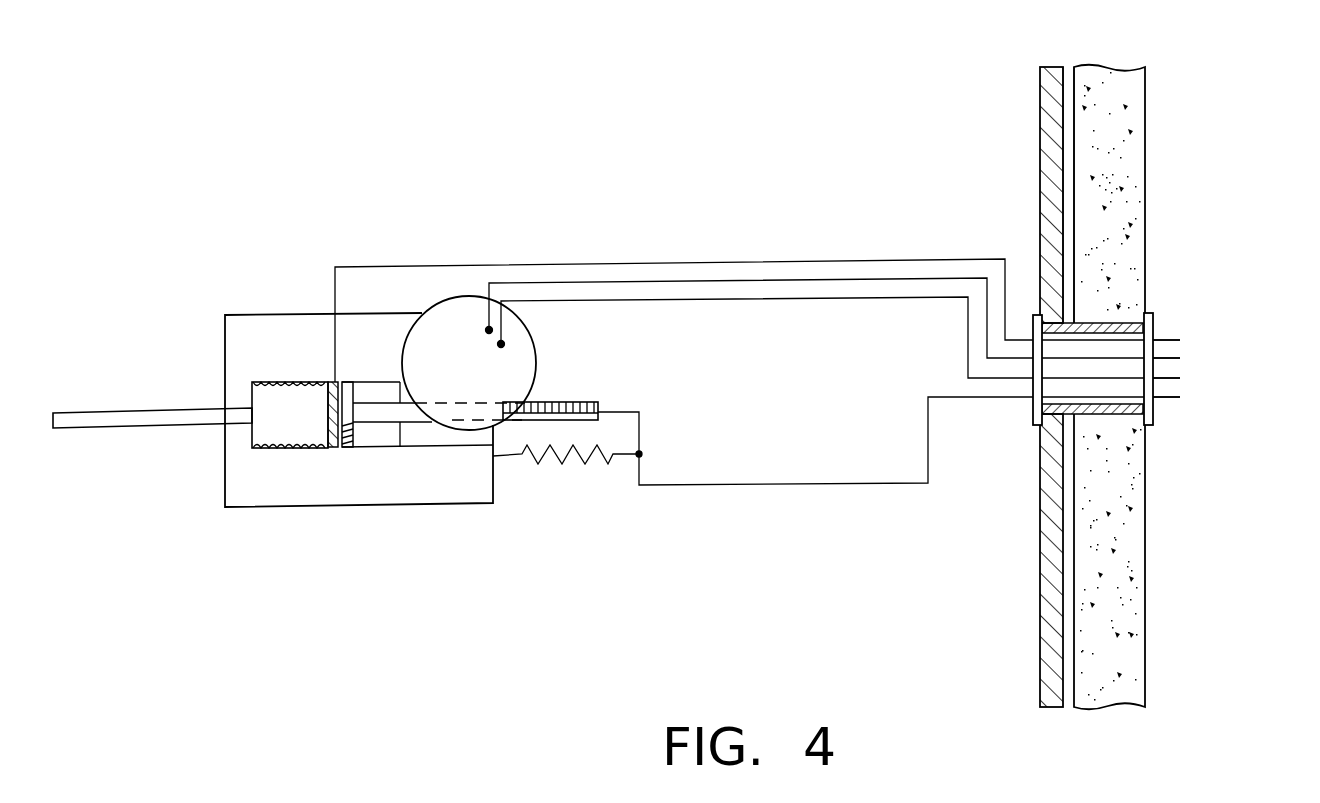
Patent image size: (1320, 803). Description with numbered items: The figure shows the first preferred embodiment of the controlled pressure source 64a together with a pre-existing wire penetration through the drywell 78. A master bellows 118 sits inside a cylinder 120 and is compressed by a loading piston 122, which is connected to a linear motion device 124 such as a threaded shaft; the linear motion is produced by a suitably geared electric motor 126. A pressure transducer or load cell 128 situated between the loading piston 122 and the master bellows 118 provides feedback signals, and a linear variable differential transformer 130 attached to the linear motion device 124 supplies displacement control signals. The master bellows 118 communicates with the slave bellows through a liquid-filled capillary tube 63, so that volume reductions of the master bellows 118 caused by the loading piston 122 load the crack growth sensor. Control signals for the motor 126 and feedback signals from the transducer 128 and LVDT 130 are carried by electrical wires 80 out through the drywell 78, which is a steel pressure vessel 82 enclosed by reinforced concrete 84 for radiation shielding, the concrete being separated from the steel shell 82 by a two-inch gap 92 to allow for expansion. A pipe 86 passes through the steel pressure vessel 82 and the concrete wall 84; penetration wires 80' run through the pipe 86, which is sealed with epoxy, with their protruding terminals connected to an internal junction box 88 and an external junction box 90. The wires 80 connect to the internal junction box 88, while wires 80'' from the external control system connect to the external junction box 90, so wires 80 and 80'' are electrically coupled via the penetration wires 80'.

The capillary tube 63 is at (150, 427).
The controlled pressure source 64a is at (667, 236).
The drywell 78 is at (1120, 366).
The electrical wires 80 is at (834, 290).
The penetration electrical wires 80' is at (1149, 297).
The external electrical wires 80'' is at (1236, 359).
The steel pressure vessel 82 is at (1042, 537).
The reinforced concrete 84 is at (1128, 201).
The pipe 86 is at (1112, 413).
The internal junction box 88 is at (1034, 418).
The external junction box 90 is at (1152, 418).
The gap 92 is at (1067, 68).
The master bellows 118 is at (297, 433).
The cylinder 120 is at (267, 313).
The loading piston 122 is at (348, 450).
The linear motion device 124 is at (604, 391).
The electric motor 126 is at (531, 352).
The pressure transducer 128 is at (335, 383).
The linear variable differential transformer 130 is at (568, 460).